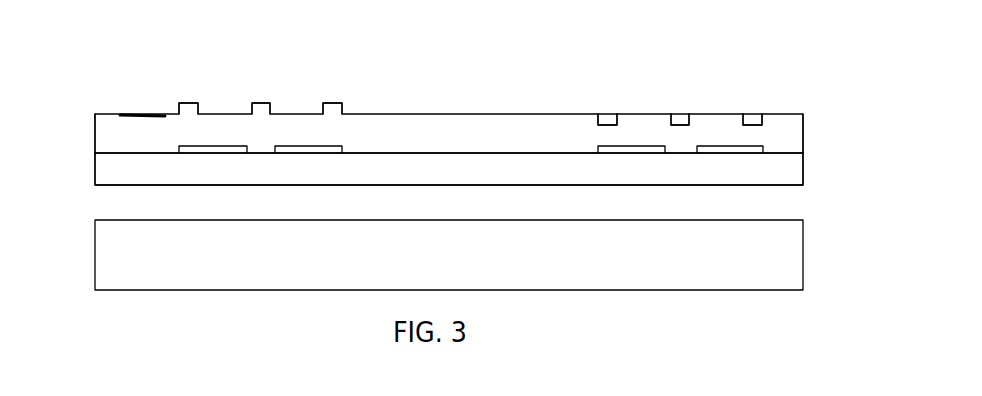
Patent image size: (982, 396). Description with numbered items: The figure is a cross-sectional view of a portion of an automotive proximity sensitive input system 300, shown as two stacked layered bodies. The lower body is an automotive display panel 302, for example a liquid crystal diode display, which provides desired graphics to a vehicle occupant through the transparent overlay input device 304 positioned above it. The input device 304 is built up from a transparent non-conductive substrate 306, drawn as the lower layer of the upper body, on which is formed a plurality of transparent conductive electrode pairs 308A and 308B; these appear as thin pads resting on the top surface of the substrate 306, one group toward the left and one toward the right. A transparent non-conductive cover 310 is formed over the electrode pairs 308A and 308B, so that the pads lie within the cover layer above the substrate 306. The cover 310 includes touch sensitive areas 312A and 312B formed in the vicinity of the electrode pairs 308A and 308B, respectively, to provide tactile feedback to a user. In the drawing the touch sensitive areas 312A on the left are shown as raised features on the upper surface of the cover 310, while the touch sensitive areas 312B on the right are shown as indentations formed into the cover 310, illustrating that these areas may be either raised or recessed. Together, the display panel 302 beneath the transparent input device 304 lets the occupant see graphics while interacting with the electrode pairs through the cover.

The automotive proximity sensitive input system 300 is at (750, 53).
The automotive display panel 302 is at (95, 253).
The transparent overlay input device 304 is at (825, 153).
The transparent non-conductive substrate 306 is at (95, 170).
The transparent conductive electrode pair 308A is at (188, 140).
The transparent conductive electrode pair 308B is at (760, 140).
The transparent non-conductive cover 310 is at (95, 138).
The touch sensitive area 312A is at (340, 95).
The touch sensitive area 312B is at (763, 110).